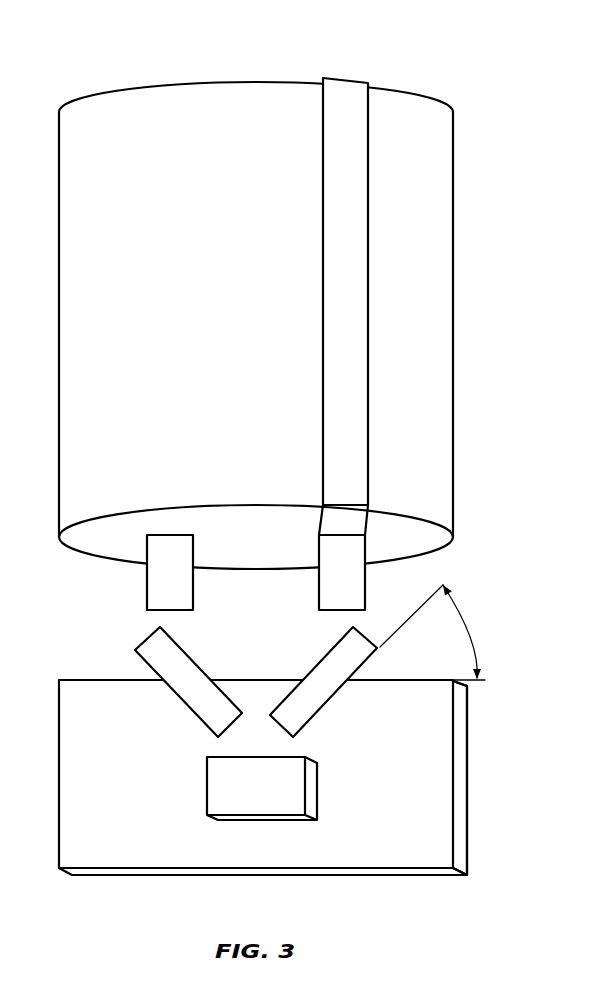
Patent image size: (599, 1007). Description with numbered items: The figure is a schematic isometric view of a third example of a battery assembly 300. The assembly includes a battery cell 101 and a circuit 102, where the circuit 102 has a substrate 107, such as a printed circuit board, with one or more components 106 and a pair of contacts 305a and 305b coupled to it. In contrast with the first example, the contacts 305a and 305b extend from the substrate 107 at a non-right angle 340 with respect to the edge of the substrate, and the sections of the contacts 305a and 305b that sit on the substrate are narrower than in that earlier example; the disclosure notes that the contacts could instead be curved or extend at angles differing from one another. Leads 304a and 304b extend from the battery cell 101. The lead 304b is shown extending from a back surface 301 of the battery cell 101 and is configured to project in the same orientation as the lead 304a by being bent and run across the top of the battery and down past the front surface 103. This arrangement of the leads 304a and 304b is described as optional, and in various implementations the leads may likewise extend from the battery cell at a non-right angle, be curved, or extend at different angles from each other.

The battery assembly 300 is at (465, 49).
The back surface 301 is at (405, 92).
The battery cell 101 is at (453, 318).
The front surface 103 is at (432, 542).
The lead 304a is at (147, 584).
The lead 304b is at (365, 580).
The contact 305a is at (138, 647).
The contact 305b is at (328, 652).
The non-right angle 340 is at (478, 640).
The substrate 107 is at (458, 763).
The circuit 102 is at (469, 866).
The component 106 is at (257, 817).